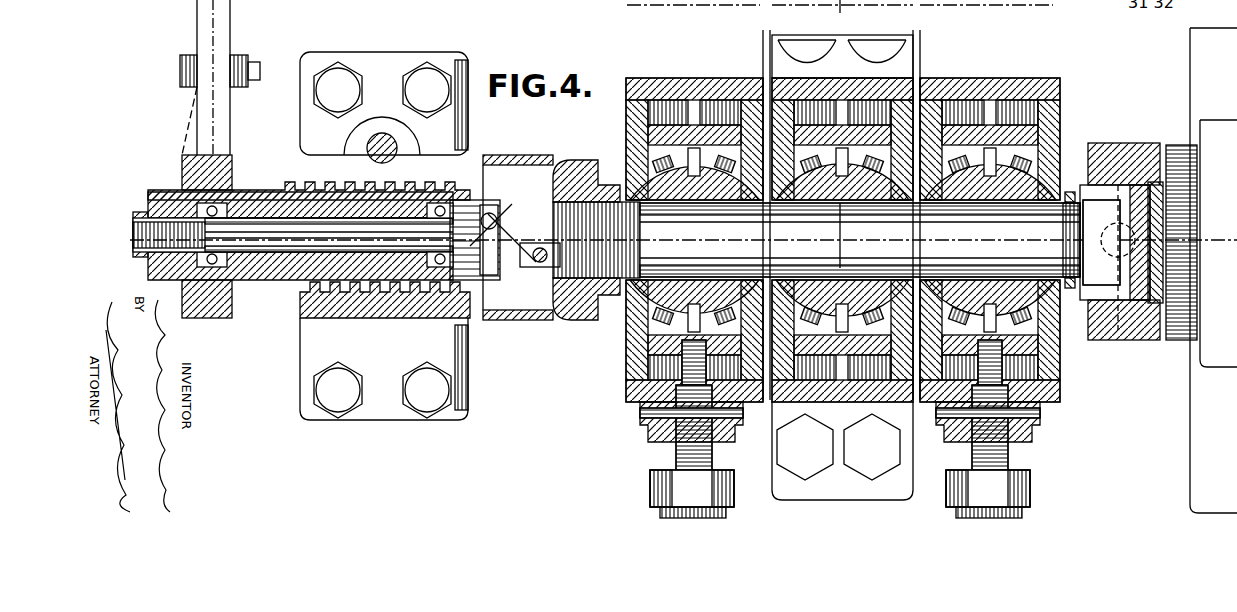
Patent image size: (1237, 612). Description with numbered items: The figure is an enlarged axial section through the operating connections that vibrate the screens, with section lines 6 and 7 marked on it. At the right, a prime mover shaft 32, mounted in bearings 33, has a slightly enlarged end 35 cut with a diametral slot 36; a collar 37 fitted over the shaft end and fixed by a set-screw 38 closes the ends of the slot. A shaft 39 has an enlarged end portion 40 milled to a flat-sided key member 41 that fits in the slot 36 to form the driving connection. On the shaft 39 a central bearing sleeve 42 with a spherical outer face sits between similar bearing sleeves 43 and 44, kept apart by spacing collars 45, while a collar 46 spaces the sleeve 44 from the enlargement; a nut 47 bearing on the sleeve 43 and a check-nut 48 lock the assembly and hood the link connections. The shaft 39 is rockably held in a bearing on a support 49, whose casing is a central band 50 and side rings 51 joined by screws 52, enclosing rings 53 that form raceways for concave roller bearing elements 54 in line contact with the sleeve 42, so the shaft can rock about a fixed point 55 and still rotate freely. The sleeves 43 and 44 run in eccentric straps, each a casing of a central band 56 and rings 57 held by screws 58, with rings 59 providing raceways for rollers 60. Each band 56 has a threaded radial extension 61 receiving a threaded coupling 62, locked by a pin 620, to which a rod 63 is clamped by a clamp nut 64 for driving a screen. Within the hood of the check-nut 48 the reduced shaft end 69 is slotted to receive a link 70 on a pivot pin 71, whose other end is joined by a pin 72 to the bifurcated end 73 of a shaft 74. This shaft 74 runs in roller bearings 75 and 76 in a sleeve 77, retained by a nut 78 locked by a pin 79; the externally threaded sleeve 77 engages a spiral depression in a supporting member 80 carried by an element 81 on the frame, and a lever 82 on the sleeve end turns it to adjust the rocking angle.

The section line 6- 6 is at (508, 306).
The section line 7- 7 is at (1068, 350).
The prime mover shaft 32 is at (1180, 340).
The bearings 33 is at (1190, 120).
The end of shaft 35 is at (1158, 182).
The slot 36 is at (1108, 185).
The collar 37 is at (1118, 340).
The set-screw 38 is at (1130, 340).
The shaft 39 is at (620, 298).
The enlarged end portion 40 is at (1070, 192).
The key member 41 is at (1080, 285).
The central bearing sleeve 42 is at (860, 185).
The bearing sleeve 43 is at (700, 190).
The bearing sleeve 44 is at (1000, 190).
The spacing collars 45 is at (768, 200).
The collar 46 is at (1068, 210).
The nut 47 is at (600, 185).
The check-nut 48 is at (496, 156).
The support 49 is at (913, 58).
The central band 50 is at (900, 60).
The side rings 51 is at (764, 80).
The screws 52 is at (862, 355).
The rings 53 is at (835, 355).
The roller bearing elements 54 is at (868, 172).
The point 55 is at (840, 250).
The central band 56 is at (684, 82).
The rings 57 is at (634, 86).
The screws 58 is at (666, 106).
The rings 59 is at (660, 134).
The rollers 60 is at (690, 330).
The radial extension 61 is at (648, 440).
The threaded coupling 62 is at (676, 458).
The rod 63 is at (726, 509).
The clamp nut 64 is at (650, 488).
The reduced end 69 is at (548, 215).
The link 70 is at (520, 262).
The pivot pin 71 is at (548, 265).
The pin 72 is at (497, 221).
The bifurcated end 73 is at (470, 268).
The shaft 74 is at (290, 242).
The roller bearing 75 is at (436, 268).
The roller bearing 76 is at (232, 195).
The sleeve 77 is at (262, 200).
The nut 78 is at (160, 266).
The pin 79 is at (136, 232).
The supporting member 80 is at (425, 168).
The element 81 is at (388, 62).
The lever 82 is at (182, 166).
The pin 620 is at (640, 413).